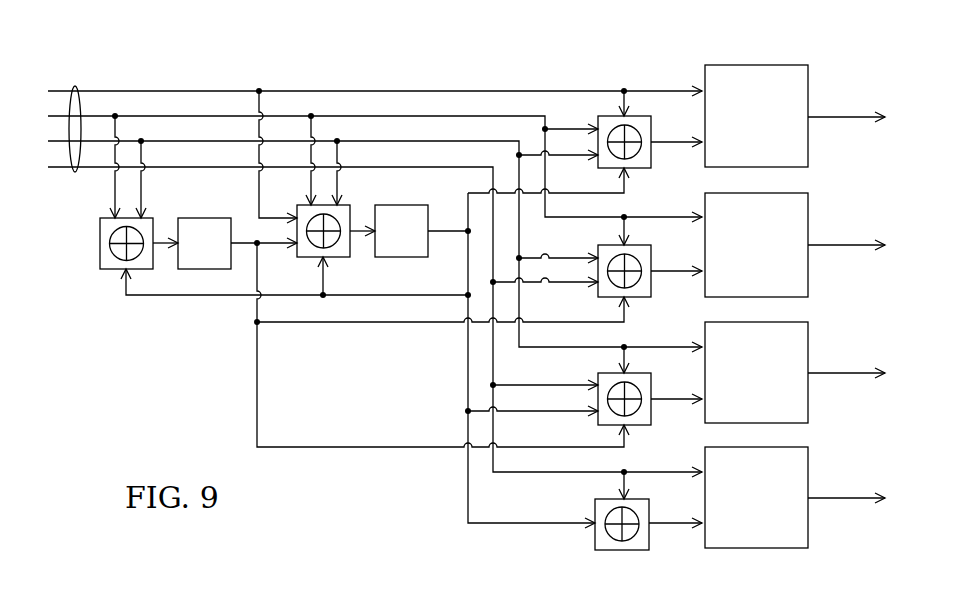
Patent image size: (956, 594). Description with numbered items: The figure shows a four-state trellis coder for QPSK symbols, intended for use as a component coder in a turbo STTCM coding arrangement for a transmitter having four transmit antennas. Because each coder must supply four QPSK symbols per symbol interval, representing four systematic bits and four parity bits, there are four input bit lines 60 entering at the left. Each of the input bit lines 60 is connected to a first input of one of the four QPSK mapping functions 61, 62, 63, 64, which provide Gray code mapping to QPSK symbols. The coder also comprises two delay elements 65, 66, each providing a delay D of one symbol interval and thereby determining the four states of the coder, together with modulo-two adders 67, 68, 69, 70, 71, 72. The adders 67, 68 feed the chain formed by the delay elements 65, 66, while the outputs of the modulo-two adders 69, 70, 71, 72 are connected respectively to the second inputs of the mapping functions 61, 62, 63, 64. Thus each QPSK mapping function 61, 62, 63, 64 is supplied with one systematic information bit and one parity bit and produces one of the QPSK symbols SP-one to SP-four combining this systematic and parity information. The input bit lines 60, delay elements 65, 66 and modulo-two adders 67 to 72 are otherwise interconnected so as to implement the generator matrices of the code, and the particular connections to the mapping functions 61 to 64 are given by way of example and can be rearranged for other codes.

The input bit lines 60 is at (79, 87).
The QPSK mapping function 61 is at (803, 162).
The QPSK mapping function 62 is at (803, 292).
The QPSK mapping function 63 is at (803, 418).
The QPSK mapping function 64 is at (803, 543).
The delay element 65 is at (215, 219).
The delay element 66 is at (405, 255).
The modulo-2 adder 67 is at (151, 219).
The modulo-2 adder 68 is at (346, 254).
The modulo-2 adder 69 is at (645, 164).
The modulo-2 adder 70 is at (645, 292).
The modulo-2 adder 71 is at (645, 420).
The modulo-2 adder 72 is at (643, 545).